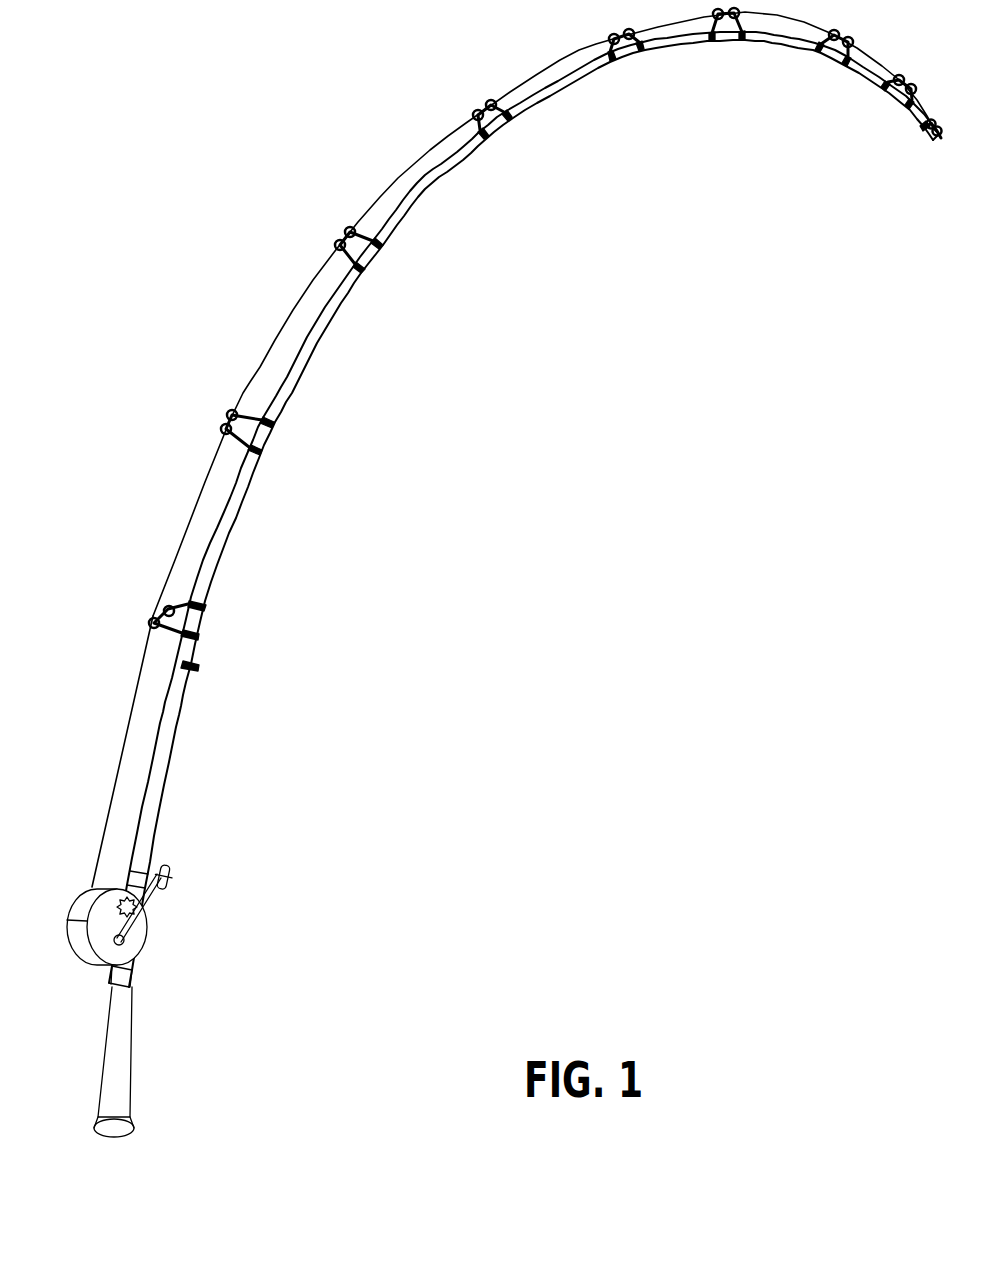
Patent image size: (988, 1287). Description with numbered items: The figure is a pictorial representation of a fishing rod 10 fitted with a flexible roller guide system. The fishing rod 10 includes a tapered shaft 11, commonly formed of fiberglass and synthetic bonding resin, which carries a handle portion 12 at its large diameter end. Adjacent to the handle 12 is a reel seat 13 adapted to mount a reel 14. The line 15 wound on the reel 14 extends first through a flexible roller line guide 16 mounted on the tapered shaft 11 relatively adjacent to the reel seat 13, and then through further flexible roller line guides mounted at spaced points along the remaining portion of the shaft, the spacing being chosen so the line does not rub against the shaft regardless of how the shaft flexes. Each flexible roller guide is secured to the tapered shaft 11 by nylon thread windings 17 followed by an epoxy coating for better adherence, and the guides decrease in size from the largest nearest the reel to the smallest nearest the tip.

The fishing rod 10 is at (177, 735).
The tapered shaft 11 is at (910, 113).
The handle portion 12 is at (125, 1072).
The reel seat 13 is at (128, 973).
The reel 14 is at (137, 932).
The line 15 is at (112, 790).
The flexible roller line guide 16 is at (154, 616).
The nylon thread windings 17 is at (192, 668).